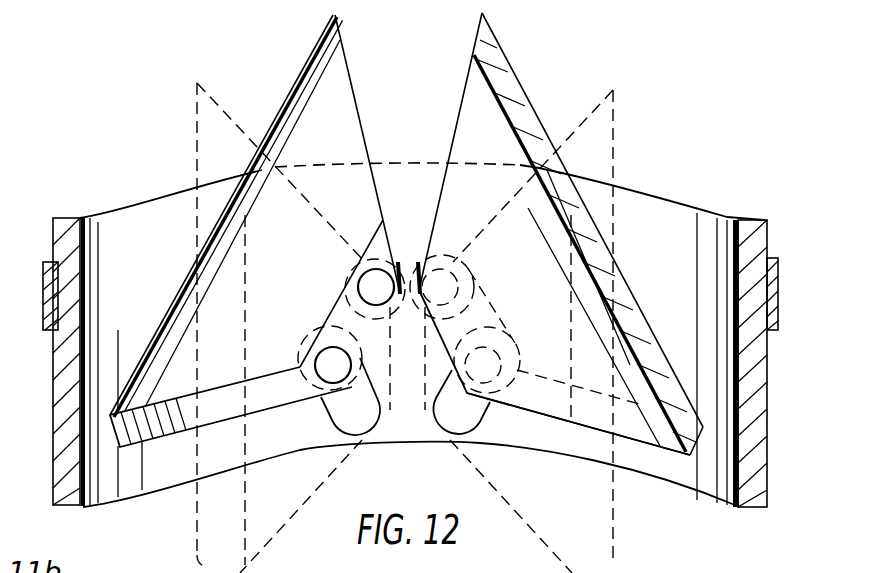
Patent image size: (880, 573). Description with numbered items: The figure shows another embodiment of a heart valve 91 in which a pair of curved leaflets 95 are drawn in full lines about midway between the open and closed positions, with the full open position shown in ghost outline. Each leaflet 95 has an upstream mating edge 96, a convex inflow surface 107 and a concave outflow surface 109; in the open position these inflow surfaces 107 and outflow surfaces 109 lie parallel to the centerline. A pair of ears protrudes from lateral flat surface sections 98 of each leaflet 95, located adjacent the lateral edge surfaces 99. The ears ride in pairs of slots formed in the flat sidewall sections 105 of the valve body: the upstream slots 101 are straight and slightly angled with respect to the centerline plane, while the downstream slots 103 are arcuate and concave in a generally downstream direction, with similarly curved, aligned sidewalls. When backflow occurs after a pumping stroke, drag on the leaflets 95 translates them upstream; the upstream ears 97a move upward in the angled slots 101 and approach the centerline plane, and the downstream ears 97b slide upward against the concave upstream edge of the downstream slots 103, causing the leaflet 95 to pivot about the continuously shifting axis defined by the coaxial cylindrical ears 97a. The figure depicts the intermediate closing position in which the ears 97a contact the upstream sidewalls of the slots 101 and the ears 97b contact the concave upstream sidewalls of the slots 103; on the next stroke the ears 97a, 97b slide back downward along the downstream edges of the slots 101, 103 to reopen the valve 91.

The heart valve 91 is at (782, 238).
The leaflets 95 is at (533, 63).
The upstream mating edges 96 is at (474, 30).
The upstream ears 97a is at (397, 263).
The downstream ears 97b is at (302, 362).
The lateral flat surface sections 98 is at (350, 300).
The lateral edge surfaces 99 is at (383, 375).
The upstream slots 101 is at (417, 265).
The downstream slots 103 is at (458, 428).
The flat sidewall sections 105 is at (560, 450).
The convex inflow surfaces 107 is at (313, 147).
The concave outflow surfaces 109 is at (572, 370).